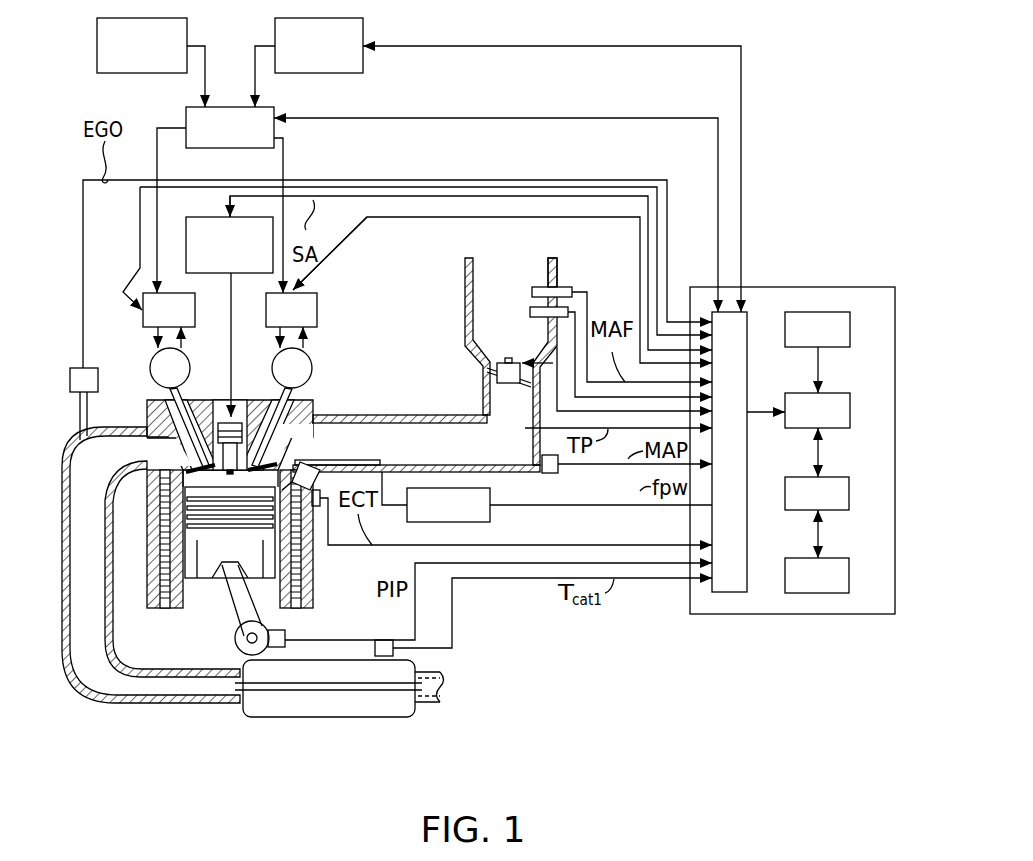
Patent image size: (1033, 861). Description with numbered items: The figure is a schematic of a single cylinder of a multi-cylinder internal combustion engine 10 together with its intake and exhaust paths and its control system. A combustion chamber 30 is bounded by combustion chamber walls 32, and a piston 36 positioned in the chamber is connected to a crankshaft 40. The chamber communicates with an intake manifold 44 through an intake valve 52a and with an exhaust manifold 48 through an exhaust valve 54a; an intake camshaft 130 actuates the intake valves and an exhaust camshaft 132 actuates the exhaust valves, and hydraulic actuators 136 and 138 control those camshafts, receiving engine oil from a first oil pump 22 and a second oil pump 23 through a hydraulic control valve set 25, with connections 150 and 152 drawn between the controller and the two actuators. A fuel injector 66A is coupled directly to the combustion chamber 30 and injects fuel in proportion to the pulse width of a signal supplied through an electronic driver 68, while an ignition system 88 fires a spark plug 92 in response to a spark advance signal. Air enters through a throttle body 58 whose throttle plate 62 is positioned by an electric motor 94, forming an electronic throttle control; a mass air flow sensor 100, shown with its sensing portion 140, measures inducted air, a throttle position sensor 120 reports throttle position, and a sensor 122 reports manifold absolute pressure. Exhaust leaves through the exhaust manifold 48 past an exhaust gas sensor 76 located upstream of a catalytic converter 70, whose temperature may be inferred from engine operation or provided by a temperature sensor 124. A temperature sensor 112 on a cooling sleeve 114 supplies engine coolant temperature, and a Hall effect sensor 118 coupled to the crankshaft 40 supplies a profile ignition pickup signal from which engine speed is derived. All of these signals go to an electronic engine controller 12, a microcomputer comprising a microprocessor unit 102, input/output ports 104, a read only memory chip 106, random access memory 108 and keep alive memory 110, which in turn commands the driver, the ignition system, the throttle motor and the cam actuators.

The internal combustion engine 10 is at (318, 356).
The electronic engine controller 12 is at (792, 287).
The first oil pump 22 is at (308, 63).
The second oil pump 23 is at (131, 63).
The hydraulic control valve set 25 is at (219, 142).
The combustion chamber 30 is at (158, 531).
The combustion chamber walls 32 is at (173, 612).
The piston 36 is at (218, 563).
The crankshaft 40 is at (236, 636).
The intake manifold 44 is at (447, 459).
The exhaust manifold 48 is at (70, 481).
The intake valve 52a is at (249, 418).
The exhaust valve 54a is at (194, 464).
The throttle body 58 is at (490, 410).
The throttle plate 62 is at (473, 348).
The fuel injector 66A is at (305, 458).
The electronic driver 68 is at (490, 513).
The catalytic converter 70 is at (318, 660).
The exhaust gas sensor 76 is at (78, 368).
The ignition system 88 is at (203, 217).
The spark plug 92 is at (217, 418).
The electric motor 94 is at (507, 358).
The mass air flow sensor 100 is at (573, 291).
The microprocessor unit 102 is at (850, 412).
The input/output ports 104 is at (747, 350).
The read only memory chip 106 is at (850, 328).
The random access memory 108 is at (849, 495).
The keep alive memory 110 is at (849, 577).
The temperature sensor 112 is at (325, 490).
The cooling sleeve 114 is at (313, 572).
The Hall effect sensor 118 is at (289, 634).
The throttle position sensor 120 is at (497, 378).
The manifold pressure sensor 122 is at (560, 469).
The catalyst temperature sensor 124 is at (383, 656).
The intake camshaft 130 is at (311, 371).
The exhaust camshaft 132 is at (153, 367).
The actuator 136 is at (275, 322).
The actuator 138 is at (153, 322).
The mass air flow sensor probe 140 is at (533, 298).
The intake cam sensor signal line 150 is at (340, 251).
The exhaust cam sensor signal line 152 is at (140, 231).